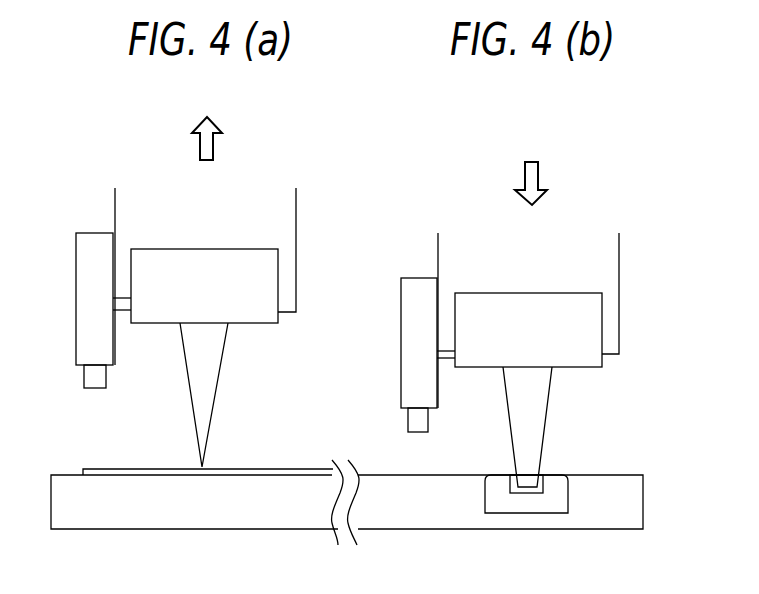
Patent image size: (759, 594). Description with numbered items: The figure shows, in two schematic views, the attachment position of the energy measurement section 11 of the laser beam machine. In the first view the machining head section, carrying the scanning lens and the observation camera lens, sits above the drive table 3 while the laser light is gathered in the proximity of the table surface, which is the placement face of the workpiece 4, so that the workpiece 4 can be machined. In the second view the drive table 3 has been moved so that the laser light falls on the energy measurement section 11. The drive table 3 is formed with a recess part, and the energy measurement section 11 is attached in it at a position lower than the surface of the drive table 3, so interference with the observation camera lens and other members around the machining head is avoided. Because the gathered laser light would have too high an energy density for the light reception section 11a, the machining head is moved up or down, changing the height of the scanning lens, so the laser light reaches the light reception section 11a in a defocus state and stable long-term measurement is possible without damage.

The drive table 3 is at (633, 500).
The workpiece 4 is at (83, 469).
The energy measurement section 11 is at (555, 507).
The light reception section 11a is at (523, 497).